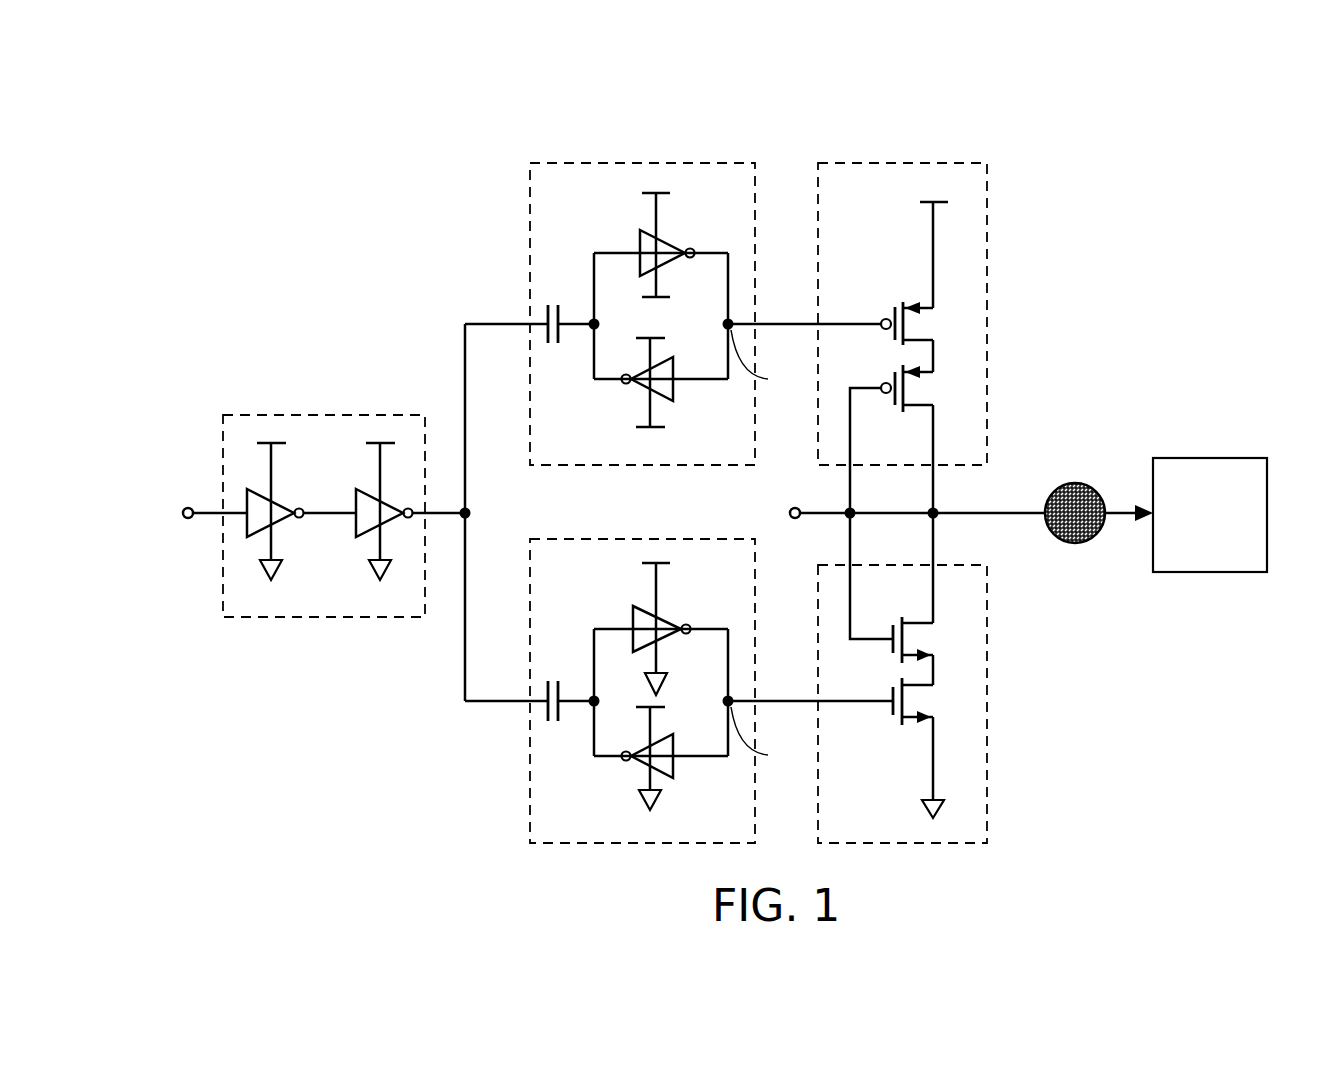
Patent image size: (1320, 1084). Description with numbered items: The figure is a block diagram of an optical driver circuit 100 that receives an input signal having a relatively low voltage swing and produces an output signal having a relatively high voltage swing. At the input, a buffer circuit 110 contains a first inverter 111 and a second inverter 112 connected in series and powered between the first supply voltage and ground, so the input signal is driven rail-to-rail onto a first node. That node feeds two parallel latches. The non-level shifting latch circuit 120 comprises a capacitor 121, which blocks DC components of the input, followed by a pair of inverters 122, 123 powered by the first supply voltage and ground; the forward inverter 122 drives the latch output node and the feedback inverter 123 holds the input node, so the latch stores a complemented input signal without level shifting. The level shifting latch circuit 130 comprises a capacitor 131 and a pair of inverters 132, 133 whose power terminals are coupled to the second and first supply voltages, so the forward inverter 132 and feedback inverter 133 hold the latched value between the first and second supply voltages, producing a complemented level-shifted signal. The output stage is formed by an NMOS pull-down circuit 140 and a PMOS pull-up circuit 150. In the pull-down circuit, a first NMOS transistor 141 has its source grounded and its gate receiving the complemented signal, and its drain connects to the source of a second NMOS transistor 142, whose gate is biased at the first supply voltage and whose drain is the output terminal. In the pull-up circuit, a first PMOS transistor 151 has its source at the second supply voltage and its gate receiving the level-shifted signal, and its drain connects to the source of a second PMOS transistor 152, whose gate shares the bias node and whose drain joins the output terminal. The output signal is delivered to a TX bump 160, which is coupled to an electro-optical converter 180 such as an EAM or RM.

The optical driver circuit 100 is at (261, 171).
The buffer circuit 110 is at (290, 414).
The first inverter 111 is at (275, 500).
The second inverter 112 is at (356, 524).
The non-level shifting latch circuit 120 is at (530, 772).
The capacitor 121 is at (557, 680).
The inverter 122 is at (668, 617).
The inverter 123 is at (673, 775).
The level shifting latch circuit 130 is at (530, 182).
The capacitor 131 is at (557, 305).
The inverter 132 is at (668, 241).
The inverter 133 is at (673, 397).
The NMOS pull-down circuit 140 is at (987, 672).
The first NMOS transistor 141 is at (893, 705).
The second NMOS transistor 142 is at (893, 641).
The PMOS pull-up circuit 150 is at (987, 196).
The first PMOS transistor 151 is at (895, 308).
The second PMOS transistor 152 is at (895, 376).
The TX bump 160 is at (1073, 483).
The electro-optical converter 180 is at (1210, 515).